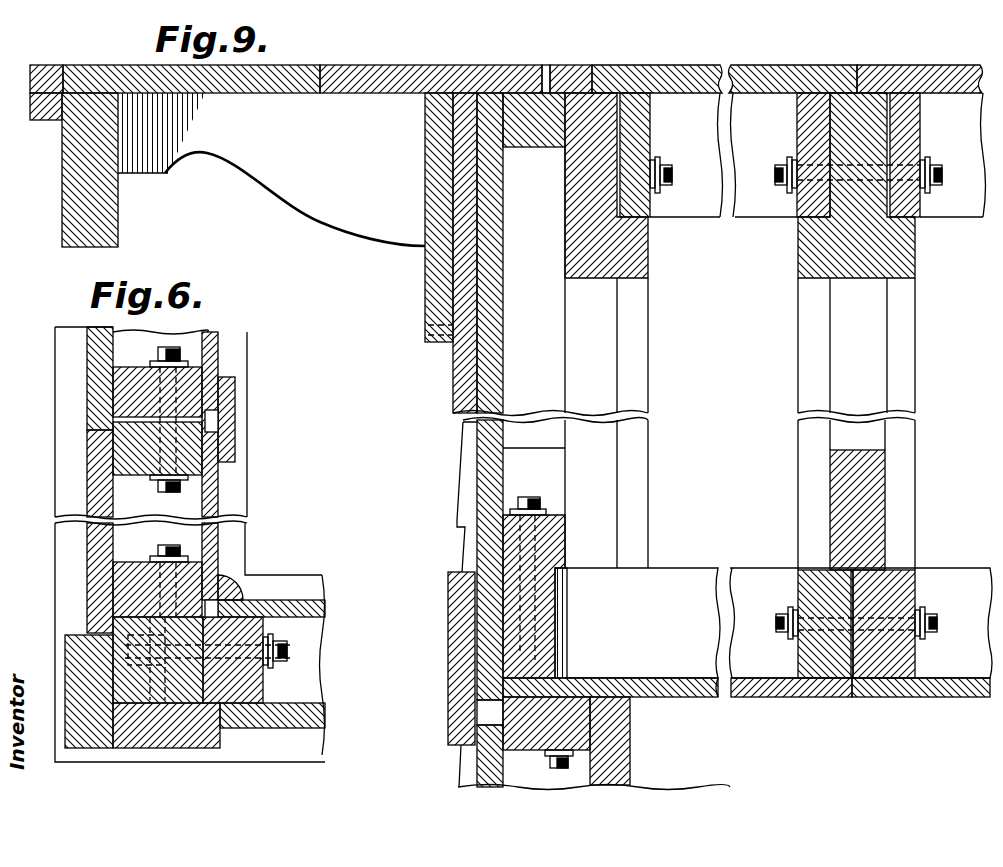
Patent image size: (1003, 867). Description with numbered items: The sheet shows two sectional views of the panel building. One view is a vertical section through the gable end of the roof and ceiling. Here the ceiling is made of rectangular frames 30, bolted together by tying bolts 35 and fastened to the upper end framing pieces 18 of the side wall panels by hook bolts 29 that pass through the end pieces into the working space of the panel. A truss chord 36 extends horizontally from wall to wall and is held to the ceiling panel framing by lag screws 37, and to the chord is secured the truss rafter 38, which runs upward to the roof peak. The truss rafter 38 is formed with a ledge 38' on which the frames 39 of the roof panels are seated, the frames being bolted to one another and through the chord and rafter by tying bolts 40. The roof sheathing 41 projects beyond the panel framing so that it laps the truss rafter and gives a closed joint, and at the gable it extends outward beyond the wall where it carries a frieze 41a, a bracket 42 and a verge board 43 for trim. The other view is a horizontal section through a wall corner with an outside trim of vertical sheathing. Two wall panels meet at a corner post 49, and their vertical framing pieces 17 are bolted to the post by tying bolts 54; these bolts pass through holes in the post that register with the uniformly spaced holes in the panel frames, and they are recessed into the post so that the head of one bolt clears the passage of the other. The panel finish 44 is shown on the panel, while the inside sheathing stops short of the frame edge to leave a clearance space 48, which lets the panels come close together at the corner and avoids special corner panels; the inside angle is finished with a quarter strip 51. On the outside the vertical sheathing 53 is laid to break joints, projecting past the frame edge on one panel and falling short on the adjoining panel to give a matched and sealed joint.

In FIG. 6, the vertical framing piece 17 is at (128, 455).
In FIG. 9, the end framing piece 18 is at (582, 732).
In FIG. 9, the hook bolt 29 is at (567, 657).
In FIG. 9, the ceiling frame 30 is at (547, 606).
In FIG. 9, the tying bolt 35 is at (933, 634).
In FIG. 9, the truss chord 36 is at (560, 501).
In FIG. 9, the lag screw 37 is at (512, 502).
In FIG. 9, the truss rafter 38 is at (772, 331).
In FIG. 9, the ledge 38' is at (637, 185).
In FIG. 9, the roof panel frame 39 is at (640, 120).
In FIG. 9, the tying bolt 40 is at (668, 171).
In FIG. 9, the roof sheathing 41 is at (777, 80).
In FIG. 9, the frieze 41a is at (443, 314).
In FIG. 9, the bracket 42 is at (332, 229).
In FIG. 9, the verge board 43 is at (118, 228).
In FIG. 9, the finish 44 is at (460, 676).
In FIG. 6, the clearance space 48 is at (218, 418).
In FIG. 6, the corner post 49 is at (123, 680).
In FIG. 6, the quarter strip 51 is at (235, 587).
In FIG. 6, the vertical sheathing 53 is at (97, 395).
In FIG. 6, the tying bolt 54 is at (155, 555).